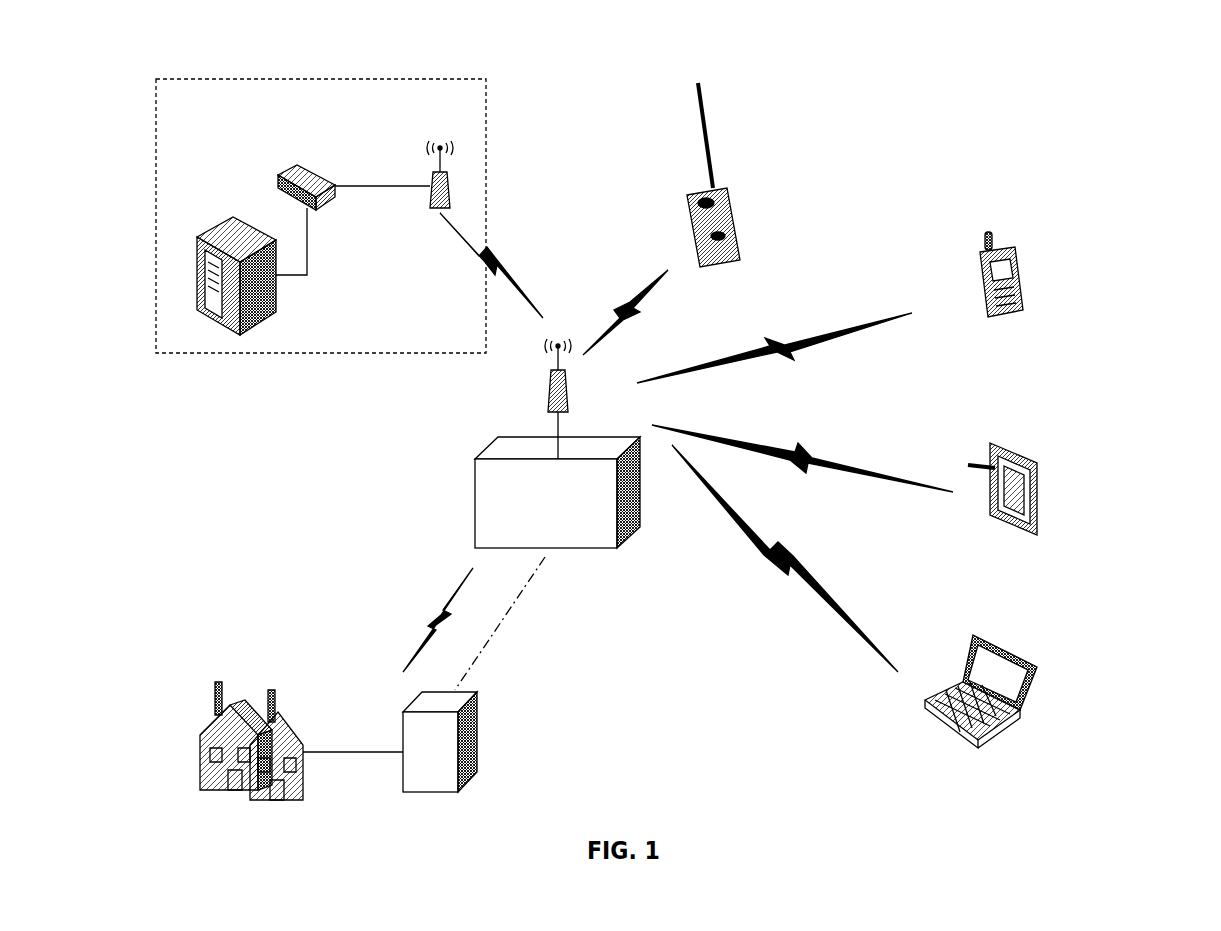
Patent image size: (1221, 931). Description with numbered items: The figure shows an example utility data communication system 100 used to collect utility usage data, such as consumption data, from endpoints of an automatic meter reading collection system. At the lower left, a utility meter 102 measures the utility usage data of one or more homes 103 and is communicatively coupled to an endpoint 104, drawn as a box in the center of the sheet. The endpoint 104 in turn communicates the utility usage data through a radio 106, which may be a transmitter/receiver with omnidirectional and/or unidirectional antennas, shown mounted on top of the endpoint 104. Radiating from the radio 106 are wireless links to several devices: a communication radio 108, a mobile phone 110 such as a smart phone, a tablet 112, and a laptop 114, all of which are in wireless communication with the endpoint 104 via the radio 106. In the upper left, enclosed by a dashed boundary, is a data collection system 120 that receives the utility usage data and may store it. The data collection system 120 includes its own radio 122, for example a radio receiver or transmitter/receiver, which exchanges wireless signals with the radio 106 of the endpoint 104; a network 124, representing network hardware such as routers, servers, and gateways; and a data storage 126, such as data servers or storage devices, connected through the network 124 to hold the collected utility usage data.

The utility data communication system 100 is at (958, 113).
The utility meter 102 is at (435, 792).
The home(s) 103 is at (267, 687).
The endpoint 104 is at (477, 505).
The radio 106 is at (548, 403).
The communication radio 108 is at (735, 223).
The mobile phone 110 is at (1002, 242).
The tablet 112 is at (997, 438).
The laptop 114 is at (963, 738).
The data collection system 120 is at (460, 62).
The radio 122 is at (430, 183).
The network 124 is at (297, 167).
The data storage 126 is at (258, 328).